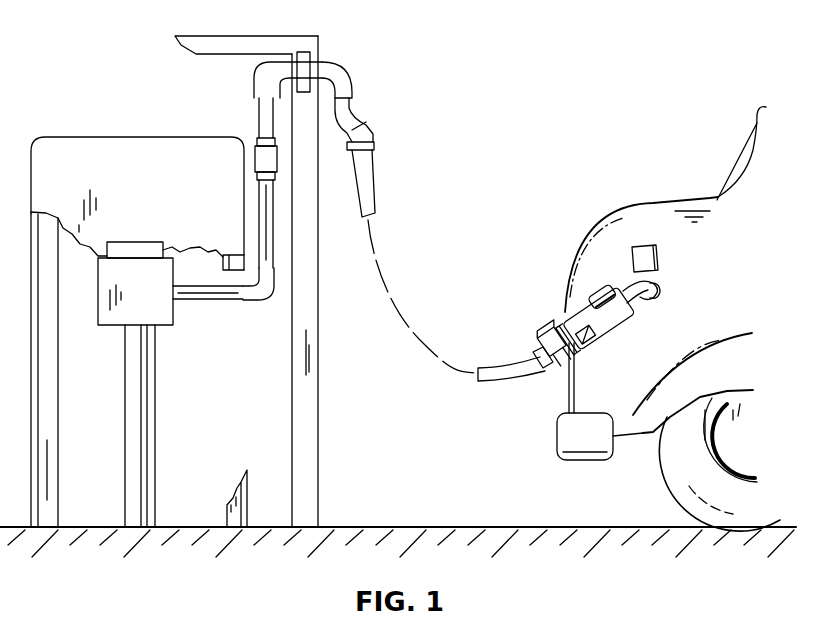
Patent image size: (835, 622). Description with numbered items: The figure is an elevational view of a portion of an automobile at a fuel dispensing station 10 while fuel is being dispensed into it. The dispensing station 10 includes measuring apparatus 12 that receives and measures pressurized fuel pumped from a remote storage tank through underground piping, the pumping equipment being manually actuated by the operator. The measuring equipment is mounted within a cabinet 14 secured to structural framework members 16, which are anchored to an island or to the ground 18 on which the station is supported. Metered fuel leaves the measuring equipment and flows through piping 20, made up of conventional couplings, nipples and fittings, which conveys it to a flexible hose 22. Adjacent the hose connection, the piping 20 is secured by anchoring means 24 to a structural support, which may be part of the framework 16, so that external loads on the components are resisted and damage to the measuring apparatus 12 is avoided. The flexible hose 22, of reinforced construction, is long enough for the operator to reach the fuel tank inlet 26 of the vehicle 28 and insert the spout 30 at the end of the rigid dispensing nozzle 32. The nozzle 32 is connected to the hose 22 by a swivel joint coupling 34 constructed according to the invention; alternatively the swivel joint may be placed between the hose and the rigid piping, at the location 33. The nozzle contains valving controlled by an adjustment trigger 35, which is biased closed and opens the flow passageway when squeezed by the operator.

The dispensing station 10 is at (503, 88).
The measuring apparatus 12 is at (173, 312).
The cabinet 14 is at (145, 146).
The structural framework members 16 is at (55, 422).
The ground 18 is at (359, 526).
The piping 20 is at (228, 302).
The flexible hose 22 is at (367, 180).
The anchoring means 24 is at (313, 60).
The fuel tank inlet 26 is at (657, 290).
The vehicle 28 is at (651, 200).
The spout 30 is at (643, 290).
The rigid dispensing nozzle 32 is at (621, 287).
The alternative swivel joint location 33 is at (363, 108).
The swivel joint coupling 34 is at (558, 372).
The adjustment trigger 35 is at (593, 343).